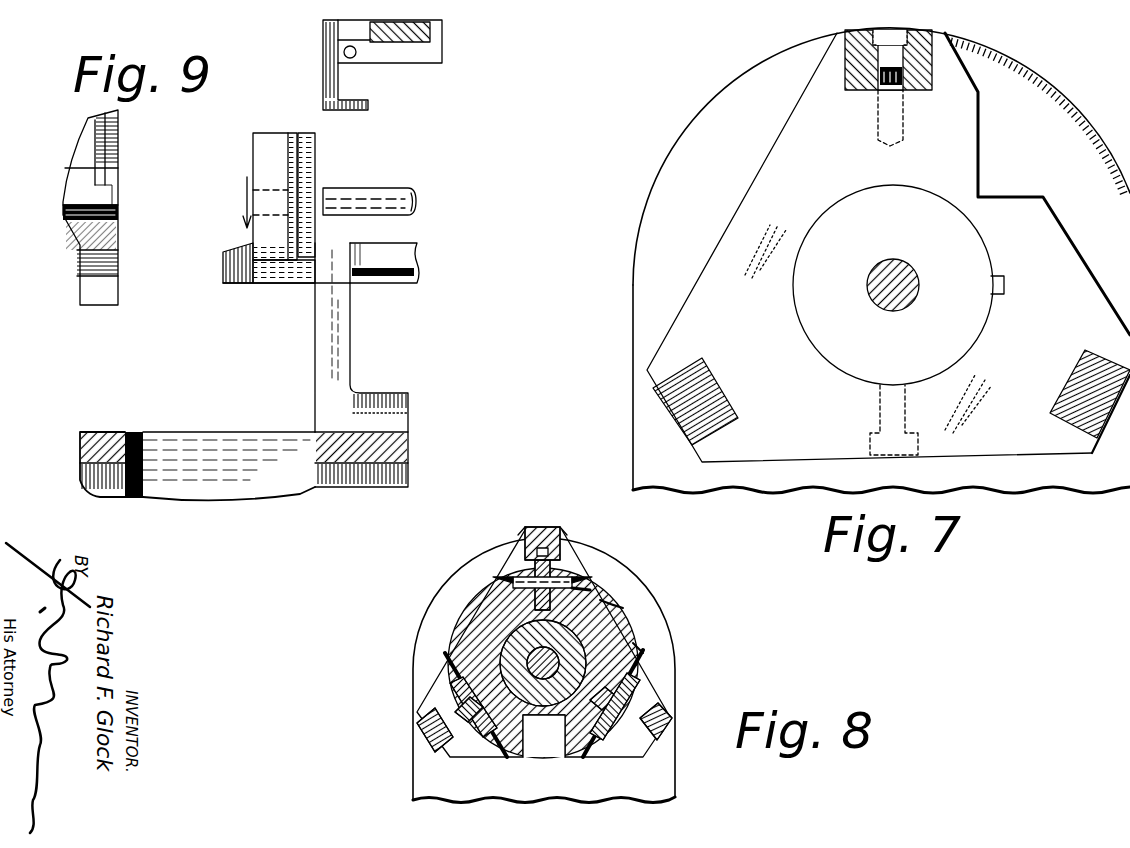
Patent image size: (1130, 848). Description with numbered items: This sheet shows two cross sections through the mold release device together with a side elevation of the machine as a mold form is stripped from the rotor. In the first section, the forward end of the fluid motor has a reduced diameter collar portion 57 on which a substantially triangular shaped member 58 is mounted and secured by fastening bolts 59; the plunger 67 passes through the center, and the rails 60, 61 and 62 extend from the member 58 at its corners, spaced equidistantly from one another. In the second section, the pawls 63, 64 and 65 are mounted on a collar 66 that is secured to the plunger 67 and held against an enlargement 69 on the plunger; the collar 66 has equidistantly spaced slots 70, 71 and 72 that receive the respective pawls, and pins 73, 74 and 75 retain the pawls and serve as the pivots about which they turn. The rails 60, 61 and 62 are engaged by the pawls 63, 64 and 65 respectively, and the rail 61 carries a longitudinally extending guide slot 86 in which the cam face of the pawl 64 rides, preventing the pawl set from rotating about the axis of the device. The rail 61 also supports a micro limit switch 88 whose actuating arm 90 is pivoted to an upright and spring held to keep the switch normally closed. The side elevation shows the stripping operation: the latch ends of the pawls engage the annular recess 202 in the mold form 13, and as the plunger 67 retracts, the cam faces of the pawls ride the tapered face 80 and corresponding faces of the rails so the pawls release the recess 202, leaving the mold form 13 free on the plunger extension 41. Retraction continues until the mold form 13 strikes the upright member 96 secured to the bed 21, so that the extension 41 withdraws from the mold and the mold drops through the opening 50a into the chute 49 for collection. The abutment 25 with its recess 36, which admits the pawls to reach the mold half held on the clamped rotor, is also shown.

In FIG. 9, the mold form 13 is at (278, 133).
In FIG. 9, the annular recess 202 is at (315, 140).
In FIG. 9, the plunger extension 41 is at (360, 192).
In FIG. 9, the abutment 25 is at (118, 210).
In FIG. 9, the recess 36 is at (118, 242).
In FIG. 9, the tapered face 80 is at (228, 284).
In FIG. 9, the rail 60 is at (406, 270).
In FIG. 7, the rail 60 is at (712, 389).
In FIG. 8, the rail 60 is at (433, 736).
In FIG. 9, the upright member 96 is at (337, 330).
In FIG. 9, the opening 50a is at (164, 432).
In FIG. 9, the bed 21 is at (394, 450).
In FIG. 9, the chute 49 is at (280, 478).
In FIG. 9, the actuating arm 90 is at (323, 50).
In FIG. 9, the micro limit switch 88 is at (430, 30).
In FIG. 7, the rail 61 is at (893, 90).
In FIG. 8, the rail 61 is at (547, 536).
In FIG. 7, the triangular shaped member 58 is at (720, 257).
In FIG. 8, the triangular shaped member 58 is at (502, 564).
In FIG. 7, the enlargement 69 is at (915, 280).
In FIG. 7, the collar portion 57 is at (978, 330).
In FIG. 8, the collar portion 57 is at (544, 663).
In FIG. 7, the rail 62 is at (1076, 378).
In FIG. 8, the rail 62 is at (660, 738).
In FIG. 7, the fastening bolt 59 is at (878, 428).
In FIG. 8, the guide slot 86 is at (524, 550).
In FIG. 8, the pawl 64 is at (551, 560).
In FIG. 8, the pin 74 is at (563, 578).
In FIG. 8, the slot 71 is at (586, 584).
In FIG. 8, the collar 66 is at (623, 608).
In FIG. 8, the plunger 67 is at (530, 654).
In FIG. 8, the slot 72 is at (643, 654).
In FIG. 8, the pin 75 is at (637, 666).
In FIG. 8, the pin 73 is at (450, 693).
In FIG. 8, the pawl 63 is at (447, 706).
In FIG. 8, the slot 70 is at (497, 751).
In FIG. 8, the pawl 65 is at (653, 701).